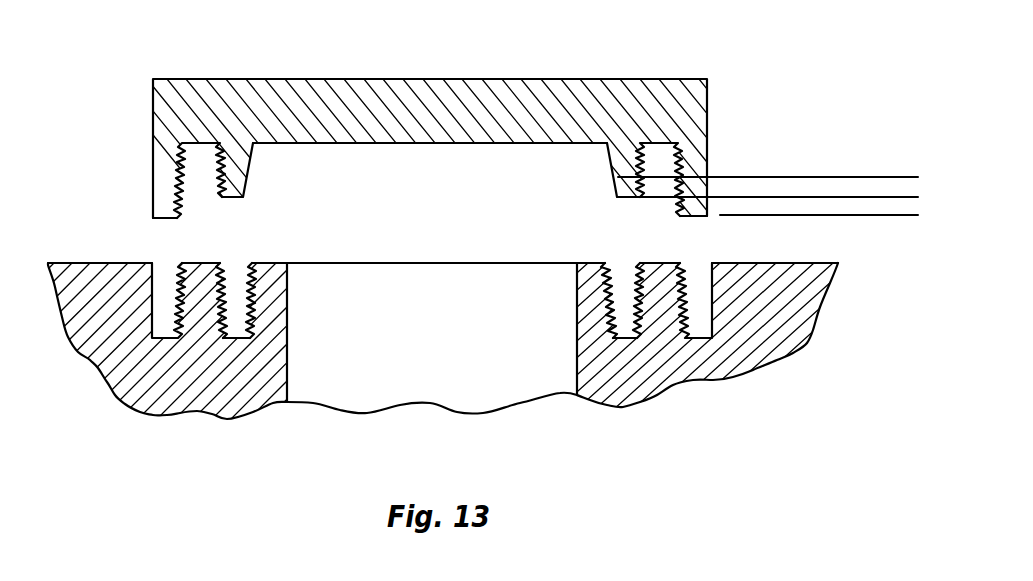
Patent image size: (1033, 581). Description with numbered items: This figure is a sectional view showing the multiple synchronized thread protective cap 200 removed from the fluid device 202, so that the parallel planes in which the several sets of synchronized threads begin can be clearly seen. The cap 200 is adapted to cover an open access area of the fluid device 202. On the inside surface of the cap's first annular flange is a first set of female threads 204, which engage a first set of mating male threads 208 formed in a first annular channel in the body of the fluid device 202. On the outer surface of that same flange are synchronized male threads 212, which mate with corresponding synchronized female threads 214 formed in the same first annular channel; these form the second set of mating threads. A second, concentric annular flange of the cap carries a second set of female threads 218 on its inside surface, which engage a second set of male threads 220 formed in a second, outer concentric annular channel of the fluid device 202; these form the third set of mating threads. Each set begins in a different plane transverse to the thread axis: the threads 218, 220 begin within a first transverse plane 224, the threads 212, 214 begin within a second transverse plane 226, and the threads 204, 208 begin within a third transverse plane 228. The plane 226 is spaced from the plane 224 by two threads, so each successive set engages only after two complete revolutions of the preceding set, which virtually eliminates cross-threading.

The protective cap 200 is at (435, 103).
The fluid device 202 is at (247, 380).
The first set of female threads 204 is at (608, 162).
The first set of mating male threads 208 is at (617, 323).
The synchronized male threads 212 is at (643, 170).
The synchronized female threads 214 is at (630, 283).
The second set of female threads 218 is at (680, 203).
The second set of male threads 220 is at (682, 275).
The first transverse plane 224 is at (872, 215).
The second transverse plane 226 is at (898, 196).
The third transverse plane 228 is at (802, 177).